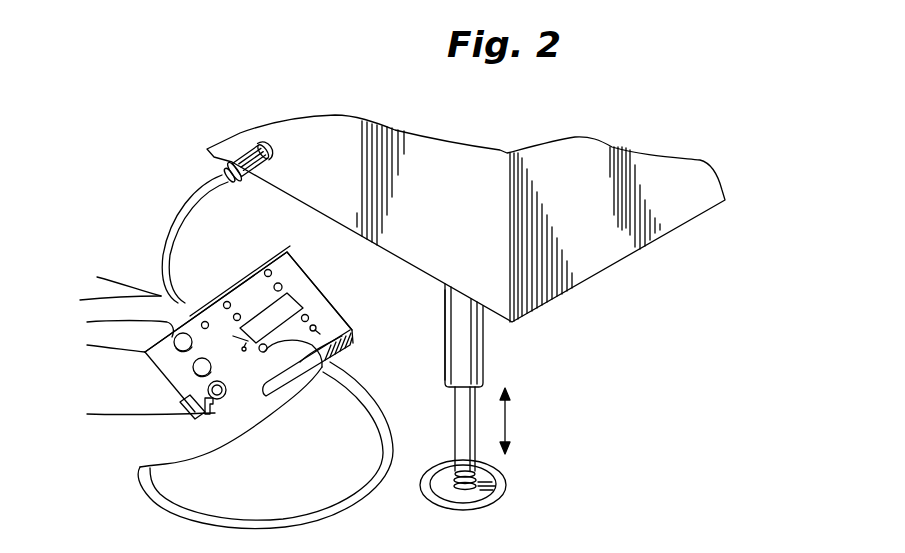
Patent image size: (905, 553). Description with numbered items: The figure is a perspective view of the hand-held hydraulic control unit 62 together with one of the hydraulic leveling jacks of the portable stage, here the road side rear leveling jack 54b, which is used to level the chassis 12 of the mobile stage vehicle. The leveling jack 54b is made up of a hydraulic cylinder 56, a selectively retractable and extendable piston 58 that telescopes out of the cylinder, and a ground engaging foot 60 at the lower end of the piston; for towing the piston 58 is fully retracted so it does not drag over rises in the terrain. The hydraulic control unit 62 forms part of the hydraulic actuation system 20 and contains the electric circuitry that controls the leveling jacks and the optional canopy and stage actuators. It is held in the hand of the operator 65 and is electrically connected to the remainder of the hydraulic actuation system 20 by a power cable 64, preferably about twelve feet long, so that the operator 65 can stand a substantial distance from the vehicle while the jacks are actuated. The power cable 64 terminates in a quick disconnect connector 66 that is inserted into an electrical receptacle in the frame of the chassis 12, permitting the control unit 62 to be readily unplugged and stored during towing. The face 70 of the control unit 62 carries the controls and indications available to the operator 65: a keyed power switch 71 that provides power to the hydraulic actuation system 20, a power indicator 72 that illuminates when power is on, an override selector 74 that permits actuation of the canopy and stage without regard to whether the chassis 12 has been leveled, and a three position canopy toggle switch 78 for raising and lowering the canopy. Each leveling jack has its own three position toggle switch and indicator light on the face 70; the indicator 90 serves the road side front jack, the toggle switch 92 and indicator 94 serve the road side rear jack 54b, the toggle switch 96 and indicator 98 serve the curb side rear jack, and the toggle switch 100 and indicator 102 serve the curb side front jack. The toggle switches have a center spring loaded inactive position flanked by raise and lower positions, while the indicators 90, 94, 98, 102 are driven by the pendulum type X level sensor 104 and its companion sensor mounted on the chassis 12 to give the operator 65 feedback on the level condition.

The chassis 12 is at (632, 228).
The hydraulic actuation system 20 is at (252, 280).
The road side rear leveling jack 54b is at (475, 350).
The hydraulic cylinder 56 is at (455, 350).
The piston 58 is at (462, 406).
The ground engaging foot 60 is at (432, 497).
The hydraulic control unit 62 is at (333, 303).
The power cable 64 is at (167, 226).
The operator 65 is at (258, 430).
The quick disconnect connector 66 is at (220, 168).
The face 70 is at (303, 380).
The keyed power switch 71 is at (180, 388).
The power indicator 72 is at (190, 370).
The override selector 74 is at (157, 342).
The canopy toggle switch 78 is at (202, 324).
The indicator 90 is at (330, 357).
The toggle switch 92 is at (352, 333).
The indicator 94 is at (310, 317).
The toggle switch 96 is at (266, 270).
The indicator 98 is at (280, 283).
The toggle switch 100 is at (226, 302).
The indicator 102 is at (237, 314).
The X level sensor 104 is at (303, 305).